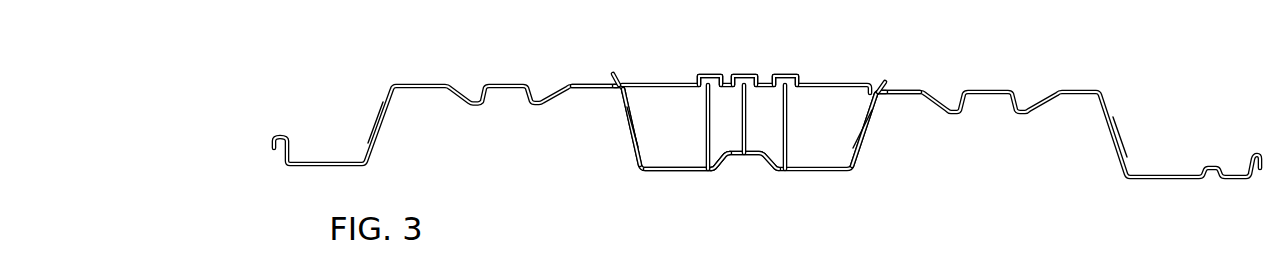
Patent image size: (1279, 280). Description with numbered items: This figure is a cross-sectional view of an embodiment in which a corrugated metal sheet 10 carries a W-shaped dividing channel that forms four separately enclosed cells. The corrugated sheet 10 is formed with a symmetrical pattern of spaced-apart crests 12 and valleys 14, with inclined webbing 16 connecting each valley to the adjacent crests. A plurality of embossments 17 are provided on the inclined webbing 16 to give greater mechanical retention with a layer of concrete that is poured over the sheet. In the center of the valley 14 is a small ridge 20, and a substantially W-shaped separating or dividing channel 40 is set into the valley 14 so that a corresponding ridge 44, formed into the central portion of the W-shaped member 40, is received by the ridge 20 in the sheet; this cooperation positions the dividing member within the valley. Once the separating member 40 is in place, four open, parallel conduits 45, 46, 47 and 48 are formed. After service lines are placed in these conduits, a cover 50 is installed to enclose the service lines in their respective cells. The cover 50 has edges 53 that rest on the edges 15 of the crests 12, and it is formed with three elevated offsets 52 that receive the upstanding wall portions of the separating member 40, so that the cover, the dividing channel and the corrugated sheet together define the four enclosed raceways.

The corrugated metal sheet 10 is at (1121, 90).
The crest 12 is at (585, 83).
The valley 14 is at (672, 172).
The edge of crest 15 is at (615, 88).
The inclined webbing 16 is at (628, 133).
The embossment 17 is at (373, 117).
The ridge 20 is at (746, 160).
The W-shaped separating channel 40 is at (792, 108).
The ridge 44 is at (725, 156).
The conduit 45 is at (656, 137).
The conduit 46 is at (712, 139).
The conduit 47 is at (754, 139).
The conduit 48 is at (811, 141).
The cover 50 is at (660, 81).
The elevated offset 52 is at (714, 74).
The cover edge 53 is at (622, 72).